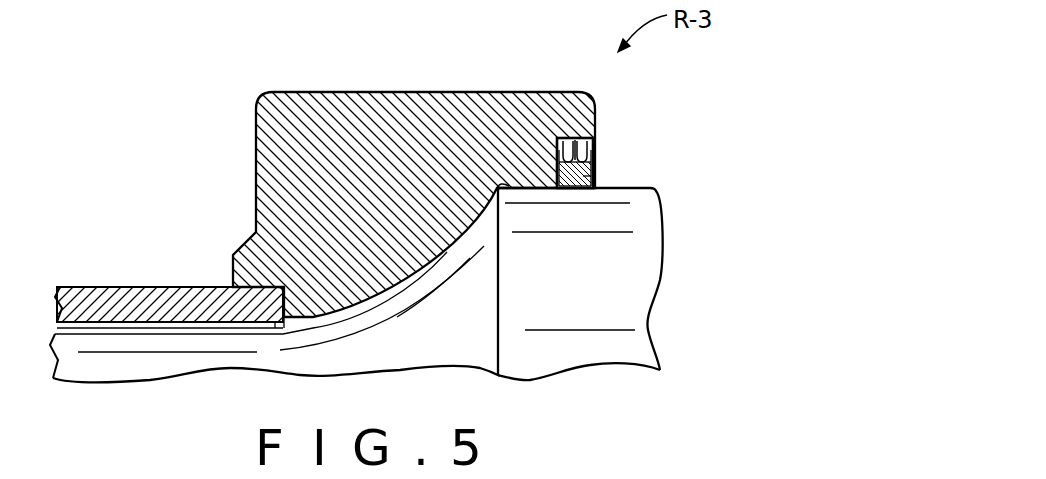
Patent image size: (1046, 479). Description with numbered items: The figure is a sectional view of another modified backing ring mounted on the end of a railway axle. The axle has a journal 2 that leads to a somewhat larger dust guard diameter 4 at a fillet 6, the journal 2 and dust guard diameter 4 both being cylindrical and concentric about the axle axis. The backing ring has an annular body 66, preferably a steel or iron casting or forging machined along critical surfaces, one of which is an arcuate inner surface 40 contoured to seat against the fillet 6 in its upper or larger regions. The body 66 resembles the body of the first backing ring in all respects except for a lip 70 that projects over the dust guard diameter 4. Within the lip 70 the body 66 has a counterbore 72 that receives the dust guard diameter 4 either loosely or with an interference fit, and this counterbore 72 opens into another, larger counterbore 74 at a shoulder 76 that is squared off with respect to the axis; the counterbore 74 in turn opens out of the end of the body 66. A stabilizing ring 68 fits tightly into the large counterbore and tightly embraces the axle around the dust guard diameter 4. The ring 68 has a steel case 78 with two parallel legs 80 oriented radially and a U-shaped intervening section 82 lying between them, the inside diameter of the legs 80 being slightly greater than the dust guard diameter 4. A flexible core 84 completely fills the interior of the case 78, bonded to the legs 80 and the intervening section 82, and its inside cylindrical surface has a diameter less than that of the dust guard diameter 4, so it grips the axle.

The journal 2 is at (105, 372).
The dust guard diameter 4 is at (573, 353).
The fillet 6 is at (447, 350).
The arcuate inner surface 40 is at (470, 277).
The annular body 66 is at (341, 113).
The stabilizing ring 68 is at (592, 140).
The lip 70 is at (565, 112).
The counterbore 72 is at (540, 188).
The counterbore 74 is at (590, 106).
The shoulder 76 is at (583, 188).
The steel case 78 is at (594, 163).
The legs 80 is at (560, 108).
The U-shaped intervening section 82 is at (600, 190).
The flexible core 84 is at (600, 187).